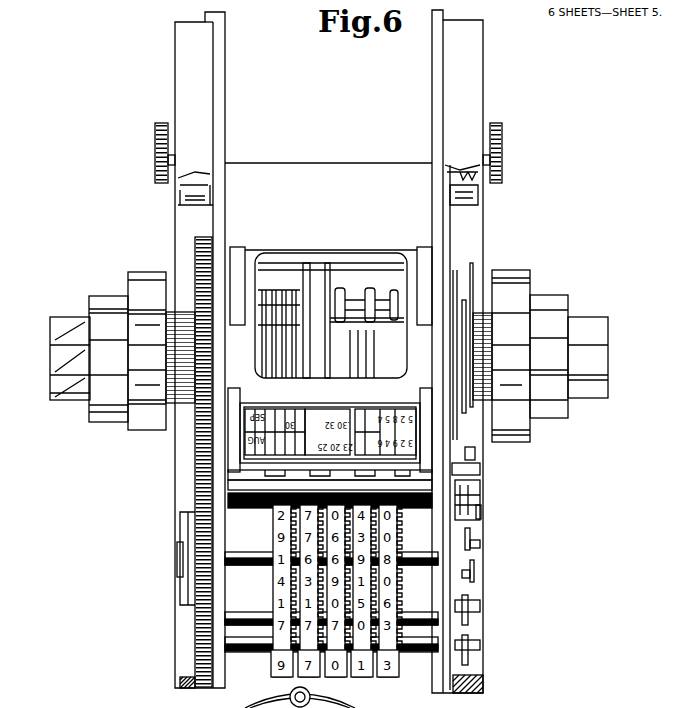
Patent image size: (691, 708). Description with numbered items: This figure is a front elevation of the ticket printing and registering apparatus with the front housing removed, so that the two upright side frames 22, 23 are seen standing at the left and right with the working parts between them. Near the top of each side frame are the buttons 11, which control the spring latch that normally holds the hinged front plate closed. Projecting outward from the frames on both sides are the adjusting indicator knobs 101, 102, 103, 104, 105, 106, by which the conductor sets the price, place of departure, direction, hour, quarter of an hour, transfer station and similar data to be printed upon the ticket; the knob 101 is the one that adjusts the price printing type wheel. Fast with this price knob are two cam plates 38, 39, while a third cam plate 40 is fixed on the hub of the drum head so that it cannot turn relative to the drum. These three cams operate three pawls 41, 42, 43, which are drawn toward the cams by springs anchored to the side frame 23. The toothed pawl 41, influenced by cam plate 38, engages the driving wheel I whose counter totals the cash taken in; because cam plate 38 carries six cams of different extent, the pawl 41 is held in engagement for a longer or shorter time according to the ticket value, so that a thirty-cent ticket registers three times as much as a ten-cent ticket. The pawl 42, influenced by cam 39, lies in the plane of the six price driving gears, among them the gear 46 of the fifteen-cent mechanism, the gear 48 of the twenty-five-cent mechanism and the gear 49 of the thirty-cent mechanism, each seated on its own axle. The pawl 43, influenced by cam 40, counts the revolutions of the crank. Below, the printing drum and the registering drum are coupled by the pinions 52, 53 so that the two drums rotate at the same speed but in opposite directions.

The buttons 11 is at (157, 177).
The side frame 22 is at (200, 360).
The side frame 23 is at (457, 359).
The cam plate 38 is at (473, 265).
The cam plate 39 is at (462, 300).
The cam plate 40 is at (466, 372).
The pawl 41 is at (476, 453).
The pawl 42 is at (482, 513).
The pawl 43 is at (463, 500).
The gear 46 is at (471, 537).
The driving wheel I is at (475, 573).
The gear 48 is at (469, 656).
The gear 49 is at (469, 608).
The pinion 52 is at (192, 425).
The pinion 53 is at (190, 548).
The adjusting indicator knob 101 is at (516, 276).
The adjusting indicator knob 102 is at (557, 296).
The adjusting indicator knob 103 is at (591, 317).
The adjusting indicator knob 104 is at (138, 272).
The adjusting indicator knob 105 is at (99, 296).
The adjusting indicator knob 106 is at (61, 317).